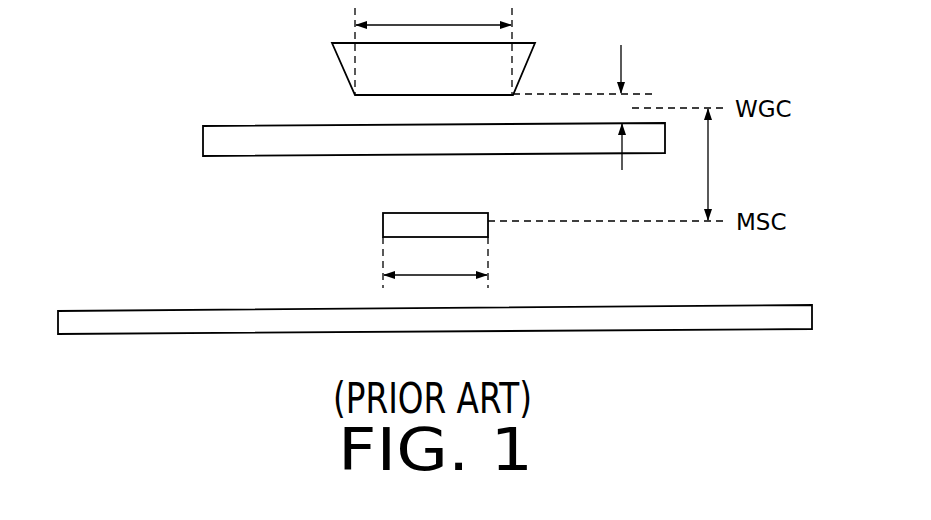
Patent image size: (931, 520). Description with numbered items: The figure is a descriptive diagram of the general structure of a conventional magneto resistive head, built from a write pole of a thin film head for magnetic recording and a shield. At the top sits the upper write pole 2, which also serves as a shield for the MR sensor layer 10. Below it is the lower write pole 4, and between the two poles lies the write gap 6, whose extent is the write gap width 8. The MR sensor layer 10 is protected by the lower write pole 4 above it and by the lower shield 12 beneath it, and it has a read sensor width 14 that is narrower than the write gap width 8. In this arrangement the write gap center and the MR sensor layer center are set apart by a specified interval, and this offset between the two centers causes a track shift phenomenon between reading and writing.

The upper write pole 2 is at (524, 60).
The lower write pole 4 is at (645, 145).
The write gap 6 is at (582, 54).
The write gap width 8 is at (433, 47).
The MR sensor layer 10 is at (383, 225).
The lower shield 12 is at (108, 320).
The read sensor width 14 is at (435, 262).